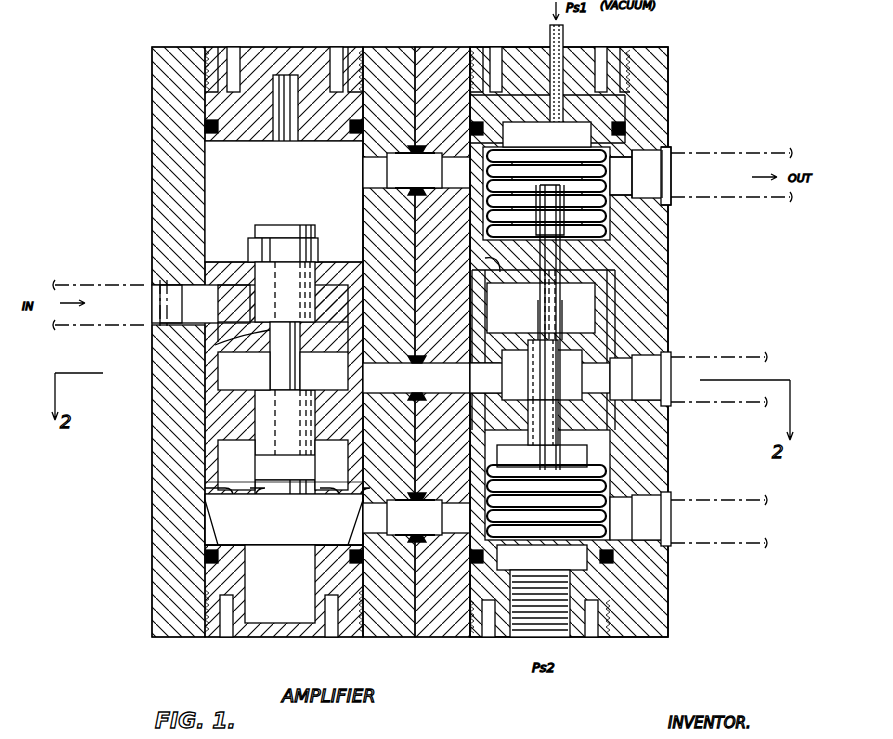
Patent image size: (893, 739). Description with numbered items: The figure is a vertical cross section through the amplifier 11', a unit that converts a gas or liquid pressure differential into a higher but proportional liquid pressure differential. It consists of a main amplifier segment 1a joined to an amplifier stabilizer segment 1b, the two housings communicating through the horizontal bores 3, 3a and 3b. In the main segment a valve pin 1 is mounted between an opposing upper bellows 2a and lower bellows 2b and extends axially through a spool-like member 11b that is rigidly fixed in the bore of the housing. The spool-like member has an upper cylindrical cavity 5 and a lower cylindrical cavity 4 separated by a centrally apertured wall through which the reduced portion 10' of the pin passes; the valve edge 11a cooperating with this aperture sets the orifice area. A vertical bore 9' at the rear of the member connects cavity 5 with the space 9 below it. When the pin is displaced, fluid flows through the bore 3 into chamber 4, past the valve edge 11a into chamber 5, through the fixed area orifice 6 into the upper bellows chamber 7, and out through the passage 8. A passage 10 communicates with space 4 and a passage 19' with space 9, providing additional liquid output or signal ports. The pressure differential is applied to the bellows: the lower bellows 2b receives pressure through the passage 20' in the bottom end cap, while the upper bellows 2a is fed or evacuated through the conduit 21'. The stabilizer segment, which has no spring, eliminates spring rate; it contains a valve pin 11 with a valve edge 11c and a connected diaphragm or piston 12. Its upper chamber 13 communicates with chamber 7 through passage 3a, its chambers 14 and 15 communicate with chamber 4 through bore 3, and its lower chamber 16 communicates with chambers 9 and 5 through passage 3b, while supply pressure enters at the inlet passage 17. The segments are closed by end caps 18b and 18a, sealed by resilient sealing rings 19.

The valve pin 1 is at (560, 303).
The main amplifier segment 1a is at (447, 53).
The amplifier stabilizer segment 1b is at (388, 70).
The upper bellows 2a is at (600, 231).
The lower bellows 2b is at (600, 490).
The horizontal bore 3 is at (431, 378).
The passage 3a is at (416, 170).
The passage 3b is at (416, 517).
The lower cylindrical cavity 4 is at (540, 375).
The upper cylindrical cavity 5 is at (541, 308).
The fixed area orifice 6 is at (489, 261).
The upper bellows chamber 7 is at (541, 181).
The passage 8 is at (655, 170).
The space below spool-like member 9 is at (547, 485).
The vertical bore 9' is at (542, 327).
The passage 10 is at (688, 368).
The reduced portion of valve pin 10' is at (556, 370).
The stabilizer valve pin 11 is at (228, 366).
The amplifier 11' is at (373, 342).
The valve edge 11a is at (605, 315).
The spool-like member 11b is at (585, 340).
The valve edge 11c is at (215, 345).
The diaphragm or piston 12 is at (225, 490).
The upper chamber 13 is at (284, 201).
The chamber 14 is at (283, 371).
The chamber 15 is at (283, 465).
The lower chamber 16 is at (284, 519).
The passage 17 is at (172, 305).
The end cap 18a is at (588, 58).
The end cap 18b is at (267, 36).
The sealing rings 19 is at (411, 358).
The passage 19' is at (688, 542).
The passage 20' is at (541, 624).
The conduit 21' is at (534, 84).